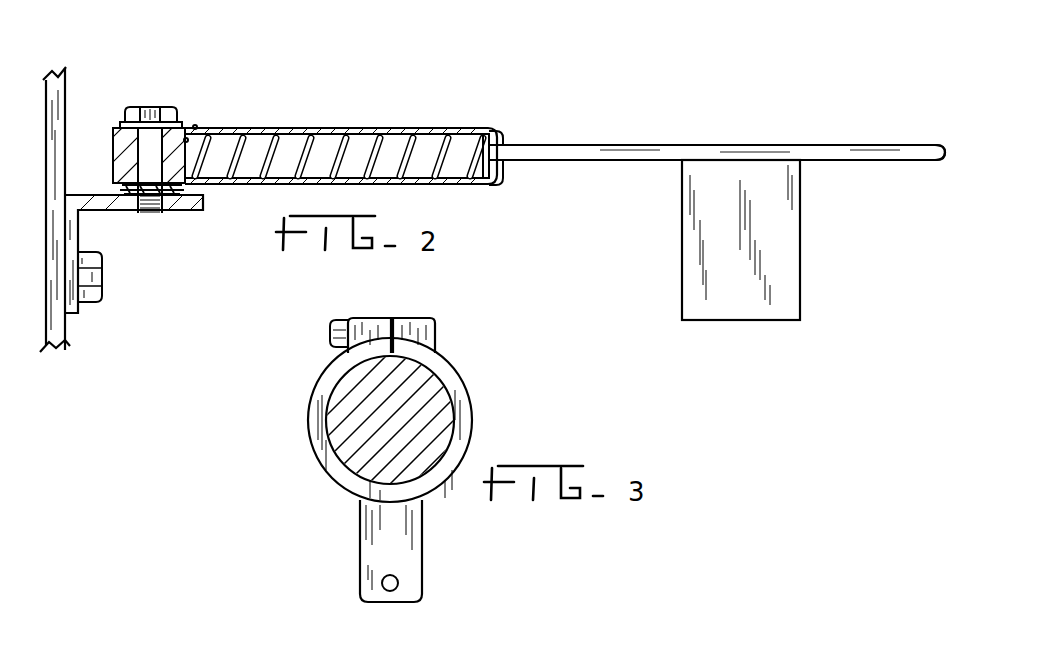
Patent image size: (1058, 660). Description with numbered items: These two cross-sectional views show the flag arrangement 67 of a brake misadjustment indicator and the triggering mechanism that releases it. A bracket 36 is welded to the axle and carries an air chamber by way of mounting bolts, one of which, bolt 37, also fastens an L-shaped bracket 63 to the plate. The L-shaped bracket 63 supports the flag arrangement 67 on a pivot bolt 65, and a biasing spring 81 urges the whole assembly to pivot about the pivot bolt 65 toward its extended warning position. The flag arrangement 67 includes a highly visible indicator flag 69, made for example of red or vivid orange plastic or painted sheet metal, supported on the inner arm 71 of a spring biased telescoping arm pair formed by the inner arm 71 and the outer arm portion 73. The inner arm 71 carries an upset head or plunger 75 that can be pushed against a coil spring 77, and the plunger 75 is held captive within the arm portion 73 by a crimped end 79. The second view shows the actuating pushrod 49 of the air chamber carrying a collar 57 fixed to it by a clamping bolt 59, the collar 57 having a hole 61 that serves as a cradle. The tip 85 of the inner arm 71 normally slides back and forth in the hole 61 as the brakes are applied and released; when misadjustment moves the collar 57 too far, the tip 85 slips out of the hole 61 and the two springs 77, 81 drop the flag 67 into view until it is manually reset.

In FIG. 2, the bracket 36 is at (65, 336).
In FIG. 2, the bolt 37 is at (98, 278).
In FIG. 3, the pushrod 49 is at (346, 410).
In FIG. 3, the collar 57 is at (462, 392).
In FIG. 3, the clamping bolt 59 is at (332, 333).
In FIG. 3, the hole 61 is at (396, 580).
In FIG. 2, the L-shaped bracket 63 is at (100, 202).
In FIG. 2, the pivot bolt 65 is at (150, 108).
In FIG. 2, the flag arrangement 67 is at (498, 108).
In FIG. 2, the indicator flag 69 is at (763, 276).
In FIG. 2, the inner arm 71 is at (605, 148).
In FIG. 2, the arm portion 73 is at (372, 127).
In FIG. 2, the plunger 75 is at (487, 181).
In FIG. 2, the coil spring 77 is at (282, 150).
In FIG. 2, the crimped end 79 is at (503, 137).
In FIG. 2, the biasing spring 81 is at (116, 203).
In FIG. 2, the tip 85 is at (925, 146).